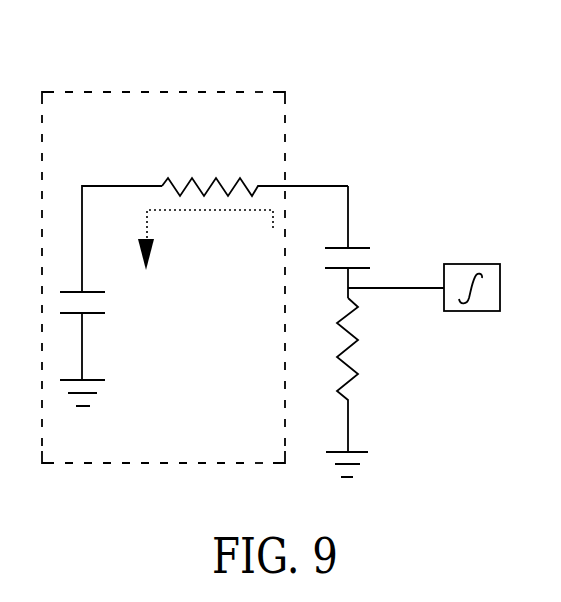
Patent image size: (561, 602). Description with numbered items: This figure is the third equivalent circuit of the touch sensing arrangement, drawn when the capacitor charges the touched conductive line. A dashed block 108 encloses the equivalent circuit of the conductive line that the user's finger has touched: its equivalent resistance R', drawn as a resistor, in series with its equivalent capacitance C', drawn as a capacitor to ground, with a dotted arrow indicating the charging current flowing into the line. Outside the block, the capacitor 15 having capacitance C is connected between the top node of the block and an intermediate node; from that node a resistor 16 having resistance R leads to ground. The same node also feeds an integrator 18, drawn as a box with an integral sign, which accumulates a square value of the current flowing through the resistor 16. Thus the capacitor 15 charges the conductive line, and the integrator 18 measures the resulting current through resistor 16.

The dashed circuit block with capacitor C' and resistor R' 108 is at (163, 92).
The capacitor C 15 is at (372, 258).
The resistor R 16 is at (361, 355).
The integrator 18 is at (470, 264).